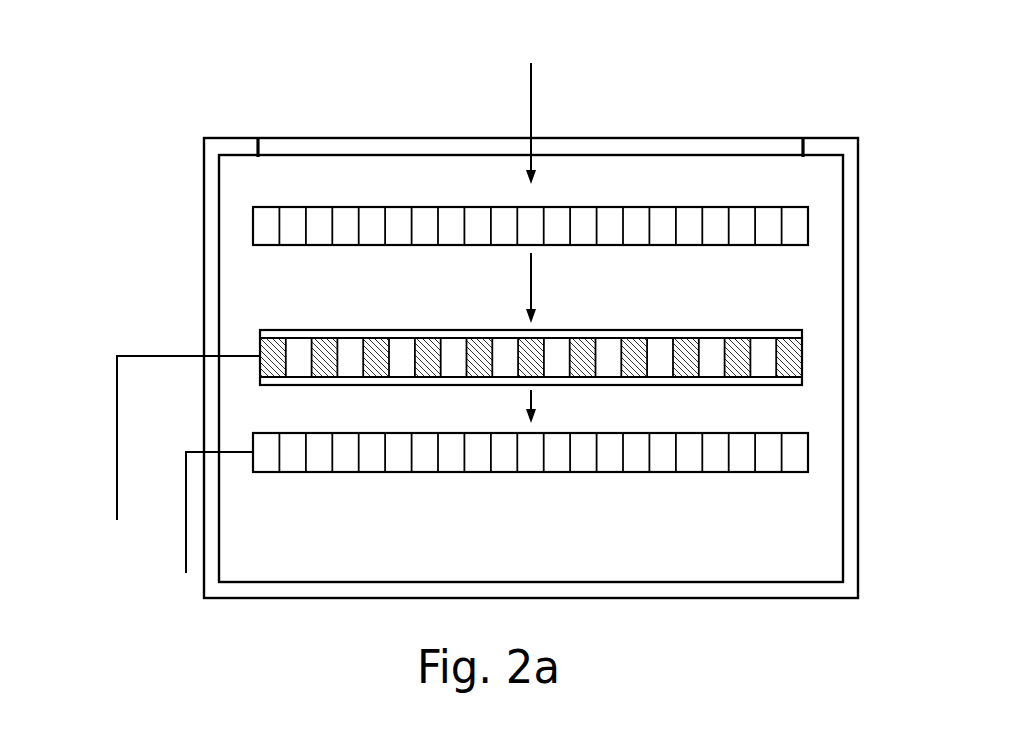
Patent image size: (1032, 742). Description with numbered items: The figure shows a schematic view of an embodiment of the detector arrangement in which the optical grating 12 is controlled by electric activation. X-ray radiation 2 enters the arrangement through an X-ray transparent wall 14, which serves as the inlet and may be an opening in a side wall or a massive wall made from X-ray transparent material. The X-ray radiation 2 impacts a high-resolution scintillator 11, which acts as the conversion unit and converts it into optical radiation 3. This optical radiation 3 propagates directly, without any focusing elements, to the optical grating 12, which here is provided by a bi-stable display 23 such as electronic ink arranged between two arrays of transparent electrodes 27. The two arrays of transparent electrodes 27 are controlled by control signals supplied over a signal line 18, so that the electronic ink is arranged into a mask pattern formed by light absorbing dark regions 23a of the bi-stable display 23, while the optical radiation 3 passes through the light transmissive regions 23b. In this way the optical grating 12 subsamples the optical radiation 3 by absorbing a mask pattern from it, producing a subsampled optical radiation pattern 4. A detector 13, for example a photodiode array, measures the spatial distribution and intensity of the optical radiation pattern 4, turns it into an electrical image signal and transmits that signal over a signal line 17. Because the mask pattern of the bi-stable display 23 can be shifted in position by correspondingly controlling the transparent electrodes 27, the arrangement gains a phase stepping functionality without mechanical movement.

The X-ray radiation 2 is at (531, 82).
The optical radiation 3 is at (531, 278).
The subsampled optical radiation pattern 4 is at (531, 399).
The scintillator 11 is at (808, 226).
The optical grating 12 is at (583, 354).
The detector 13 is at (808, 452).
The X-ray transparent wall 14 is at (723, 150).
The signal line 17 is at (186, 545).
The signal line 18 is at (117, 450).
The bi-stable display 23 is at (517, 345).
The light absorbing dark regions 23a is at (275, 347).
The light transmissive regions 23b is at (305, 345).
The transparent electrodes 27 is at (776, 329).